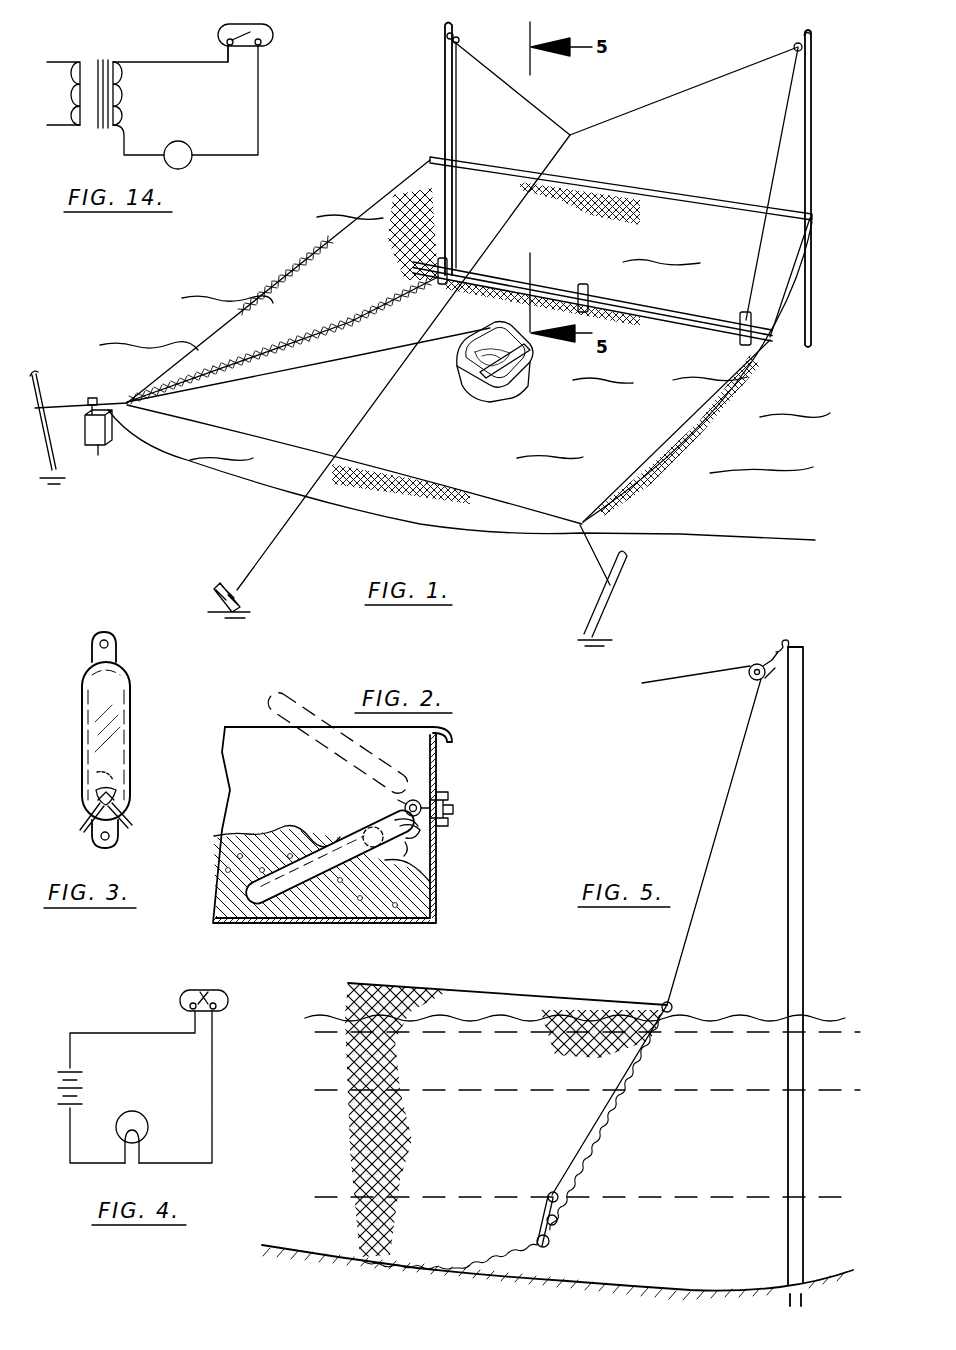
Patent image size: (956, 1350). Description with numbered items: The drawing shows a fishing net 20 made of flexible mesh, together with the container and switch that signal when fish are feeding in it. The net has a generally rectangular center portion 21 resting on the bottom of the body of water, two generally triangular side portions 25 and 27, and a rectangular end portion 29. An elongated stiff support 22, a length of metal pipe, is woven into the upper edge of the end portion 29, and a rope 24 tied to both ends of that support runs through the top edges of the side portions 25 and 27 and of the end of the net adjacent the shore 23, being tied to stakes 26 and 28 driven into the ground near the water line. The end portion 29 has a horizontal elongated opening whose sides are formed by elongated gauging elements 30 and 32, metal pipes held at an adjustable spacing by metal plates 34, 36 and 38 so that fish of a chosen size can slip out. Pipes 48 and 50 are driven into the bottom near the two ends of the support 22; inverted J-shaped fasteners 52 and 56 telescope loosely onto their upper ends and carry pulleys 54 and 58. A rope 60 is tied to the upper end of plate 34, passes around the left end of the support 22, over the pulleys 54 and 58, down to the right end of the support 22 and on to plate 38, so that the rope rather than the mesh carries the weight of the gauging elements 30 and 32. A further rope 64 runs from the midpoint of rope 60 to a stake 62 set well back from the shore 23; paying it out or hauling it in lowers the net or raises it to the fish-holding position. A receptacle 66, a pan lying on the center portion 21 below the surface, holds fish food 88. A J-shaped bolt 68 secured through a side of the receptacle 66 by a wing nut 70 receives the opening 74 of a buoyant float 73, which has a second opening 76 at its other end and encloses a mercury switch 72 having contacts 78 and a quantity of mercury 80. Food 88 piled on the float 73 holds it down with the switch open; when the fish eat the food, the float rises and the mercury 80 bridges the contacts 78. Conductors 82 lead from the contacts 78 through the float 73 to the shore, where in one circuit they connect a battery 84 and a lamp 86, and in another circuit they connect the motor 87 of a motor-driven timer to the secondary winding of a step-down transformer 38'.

In FIG. 1, the fishing net 20 is at (775, 378).
In FIG. 5, the fishing net 20 is at (331, 1146).
In FIG. 1, the center portion 21 is at (410, 460).
In FIG. 5, the center portion 21 is at (430, 1262).
In FIG. 1, the elongated stiff support 22 is at (708, 196).
In FIG. 5, the elongated stiff support 22 is at (672, 1006).
In FIG. 1, the shore 23 is at (420, 525).
In FIG. 1, the rope 24 is at (310, 246).
In FIG. 5, the rope 24 is at (545, 975).
In FIG. 1, the side portion 25 is at (392, 200).
In FIG. 5, the side portion 25 is at (345, 1068).
In FIG. 1, the stake 26 is at (42, 372).
In FIG. 1, the side portion 27 is at (712, 415).
In FIG. 1, the stake 28 is at (606, 600).
In FIG. 1, the end portion 29 is at (630, 190).
In FIG. 5, the end portion 29 is at (620, 1112).
In FIG. 1, the elongated gauging element 30 is at (688, 298).
In FIG. 5, the elongated gauging element 30 is at (560, 1226).
In FIG. 1, the elongated gauging element 32 is at (700, 337).
In FIG. 5, the elongated gauging element 32 is at (545, 1248).
In FIG. 1, the metal plate 34 is at (440, 288).
In FIG. 5, the metal plate 34 is at (547, 1196).
In FIG. 1, the metal plate 36 is at (584, 284).
In FIG. 1, the metal plate 38 is at (770, 339).
In FIG. 14, the step-down transformer 38' is at (84, 72).
In FIG. 1, the pipe 48 is at (445, 95).
In FIG. 5, the pipe 48 is at (790, 815).
In FIG. 1, the pipe 50 is at (812, 90).
In FIG. 1, the J-shaped fastener 52 is at (447, 32).
In FIG. 5, the J-shaped fastener 52 is at (788, 640).
In FIG. 1, the pulley 54 is at (457, 45).
In FIG. 5, the pulley 54 is at (752, 680).
In FIG. 1, the J-shaped fastener 56 is at (808, 30).
In FIG. 1, the pulley 58 is at (795, 54).
In FIG. 1, the rope 60 is at (548, 116).
In FIG. 5, the rope 60 is at (643, 685).
In FIG. 1, the stake 62 is at (222, 582).
In FIG. 1, the rope 64 is at (265, 552).
In FIG. 1, the receptacle 66 is at (478, 382).
In FIG. 2, the receptacle 66 is at (436, 900).
In FIG. 2, the J-shaped bolt 68 is at (413, 800).
In FIG. 2, the wing nut 70 is at (446, 796).
In FIG. 14, the mercury switch 72 is at (270, 30).
In FIG. 3, the mercury switch 72 is at (118, 790).
In FIG. 2, the mercury switch 72 is at (372, 826).
In FIG. 4, the mercury switch 72 is at (225, 992).
In FIG. 1, the float 73 is at (527, 360).
In FIG. 3, the float 73 is at (130, 718).
In FIG. 2, the float 73 is at (338, 842).
In FIG. 3, the opening 74 is at (108, 632).
In FIG. 3, the opening 76 is at (98, 845).
In FIG. 14, the electrical contacts 78 is at (232, 38).
In FIG. 3, the electrical contacts 78 is at (96, 800).
In FIG. 4, the electrical contacts 78 is at (202, 982).
In FIG. 3, the mercury 80 is at (94, 772).
In FIG. 14, the conductors 82 is at (258, 88).
In FIG. 1, the conductors 82 is at (270, 380).
In FIG. 3, the conductors 82 is at (130, 820).
In FIG. 2, the conductors 82 is at (436, 855).
In FIG. 4, the conductors 82 is at (210, 1055).
In FIG. 1, the battery 84 is at (102, 450).
In FIG. 4, the battery 84 is at (52, 1096).
In FIG. 1, the lamp 86 is at (110, 428).
In FIG. 4, the lamp 86 is at (146, 1124).
In FIG. 14, the motor 87 is at (185, 143).
In FIG. 1, the fish food 88 is at (502, 384).
In FIG. 2, the fish food 88 is at (218, 866).